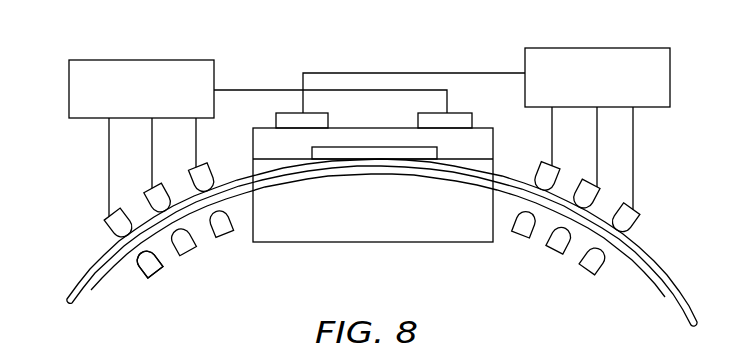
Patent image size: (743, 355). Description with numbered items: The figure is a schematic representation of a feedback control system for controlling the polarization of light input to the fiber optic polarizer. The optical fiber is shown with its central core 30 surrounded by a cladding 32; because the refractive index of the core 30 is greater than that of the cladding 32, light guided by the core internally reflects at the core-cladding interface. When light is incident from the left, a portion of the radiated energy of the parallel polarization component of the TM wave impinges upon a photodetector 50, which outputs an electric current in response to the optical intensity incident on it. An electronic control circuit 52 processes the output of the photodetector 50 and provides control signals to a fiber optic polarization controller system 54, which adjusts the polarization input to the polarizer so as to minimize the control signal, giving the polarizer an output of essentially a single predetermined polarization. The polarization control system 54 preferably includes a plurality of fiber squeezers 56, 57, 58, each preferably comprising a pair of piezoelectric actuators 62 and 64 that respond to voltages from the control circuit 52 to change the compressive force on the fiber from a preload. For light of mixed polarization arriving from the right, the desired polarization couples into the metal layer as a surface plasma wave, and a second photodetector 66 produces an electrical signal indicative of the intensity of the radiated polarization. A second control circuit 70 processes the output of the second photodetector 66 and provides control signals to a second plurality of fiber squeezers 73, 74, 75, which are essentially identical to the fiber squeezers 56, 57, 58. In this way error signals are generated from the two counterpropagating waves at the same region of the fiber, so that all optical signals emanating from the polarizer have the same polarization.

The central core 30 is at (638, 266).
The cladding 32 is at (648, 256).
The photodetector 50 is at (457, 114).
The electronic control circuit 52 is at (191, 60).
The fiber optic polarization controller system 54 is at (88, 192).
The fiber squeezer 56 is at (158, 280).
The fiber squeezer 57 is at (192, 262).
The fiber squeezer 58 is at (223, 240).
The piezoelectric actuator 62 is at (104, 217).
The piezoelectric actuator 64 is at (141, 262).
The second photodetector 66 is at (324, 113).
The second control circuit 70 is at (553, 48).
The fiber squeezer 73 is at (515, 245).
The fiber squeezer 74 is at (550, 255).
The fiber squeezer 75 is at (583, 282).